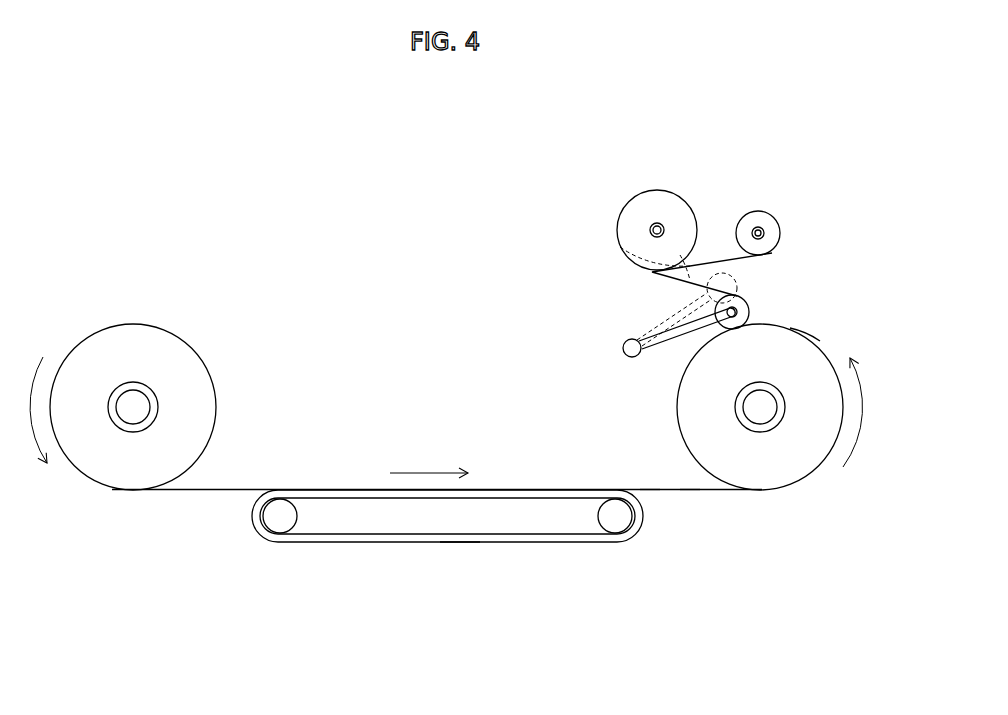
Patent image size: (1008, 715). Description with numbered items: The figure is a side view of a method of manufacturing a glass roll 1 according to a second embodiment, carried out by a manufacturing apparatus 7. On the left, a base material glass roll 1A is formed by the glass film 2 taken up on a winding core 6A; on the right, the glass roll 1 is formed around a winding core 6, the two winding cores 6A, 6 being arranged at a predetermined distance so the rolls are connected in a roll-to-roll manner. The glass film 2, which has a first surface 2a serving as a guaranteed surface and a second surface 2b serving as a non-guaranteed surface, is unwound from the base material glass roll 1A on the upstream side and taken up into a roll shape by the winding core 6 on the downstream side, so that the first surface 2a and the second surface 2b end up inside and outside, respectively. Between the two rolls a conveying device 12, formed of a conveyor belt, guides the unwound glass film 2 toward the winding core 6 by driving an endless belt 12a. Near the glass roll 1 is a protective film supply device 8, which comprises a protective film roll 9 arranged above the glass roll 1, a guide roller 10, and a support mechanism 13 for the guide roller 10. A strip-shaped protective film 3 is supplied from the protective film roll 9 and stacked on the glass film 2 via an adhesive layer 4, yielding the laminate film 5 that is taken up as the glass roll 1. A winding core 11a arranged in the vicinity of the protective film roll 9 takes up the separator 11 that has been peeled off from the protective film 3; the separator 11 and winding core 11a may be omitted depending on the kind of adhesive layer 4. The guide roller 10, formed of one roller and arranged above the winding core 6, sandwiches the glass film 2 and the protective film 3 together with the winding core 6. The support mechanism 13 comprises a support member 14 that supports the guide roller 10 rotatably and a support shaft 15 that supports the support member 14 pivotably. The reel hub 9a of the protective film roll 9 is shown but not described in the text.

The glass roll 1 is at (835, 336).
The base material glass roll 1A is at (108, 310).
The glass film 2 is at (203, 494).
The first surface 2a is at (649, 485).
The second surface 2b is at (691, 494).
The protective film 3 is at (655, 273).
The adhesive layer 4 is at (623, 247).
The laminate film 5 is at (805, 328).
The winding core 6 is at (780, 428).
The winding core 6A is at (118, 432).
The manufacturing apparatus 7 is at (484, 245).
The protective film supply device 8 is at (637, 195).
The protective film roll 9 is at (646, 188).
The reel shaft 9a is at (663, 223).
The guide roller 10 is at (738, 278).
The separator 11 is at (722, 257).
The winding core 11a is at (762, 227).
The conveying device 12 is at (388, 547).
The belt 12a is at (458, 544).
The support mechanism 13 is at (637, 340).
The support member 14 is at (677, 313).
The support shaft 15 is at (622, 358).